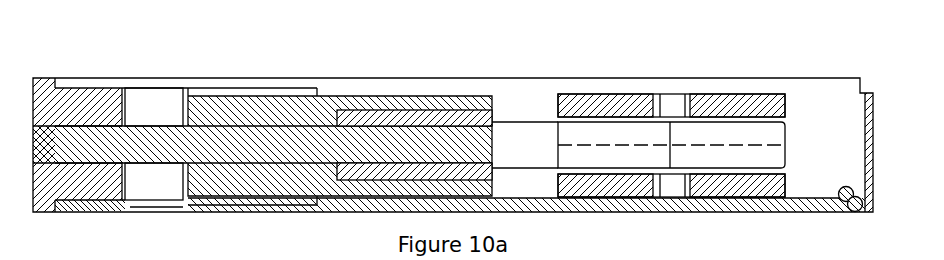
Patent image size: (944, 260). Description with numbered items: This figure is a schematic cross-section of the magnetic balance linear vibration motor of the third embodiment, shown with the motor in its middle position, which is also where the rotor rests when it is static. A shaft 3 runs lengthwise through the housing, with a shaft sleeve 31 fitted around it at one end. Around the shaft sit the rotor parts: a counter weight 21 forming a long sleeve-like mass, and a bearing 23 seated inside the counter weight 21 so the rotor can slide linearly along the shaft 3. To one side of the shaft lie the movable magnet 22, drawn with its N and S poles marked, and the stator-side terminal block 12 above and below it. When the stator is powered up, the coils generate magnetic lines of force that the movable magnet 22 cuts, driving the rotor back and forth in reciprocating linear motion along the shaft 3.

The shaft sleeve 31 is at (88, 110).
The shaft 3 is at (262, 95).
The counter weight 21 is at (340, 115).
The bearing 23 is at (437, 107).
The terminal block 12 is at (671, 113).
The movable magnet 22 is at (671, 102).